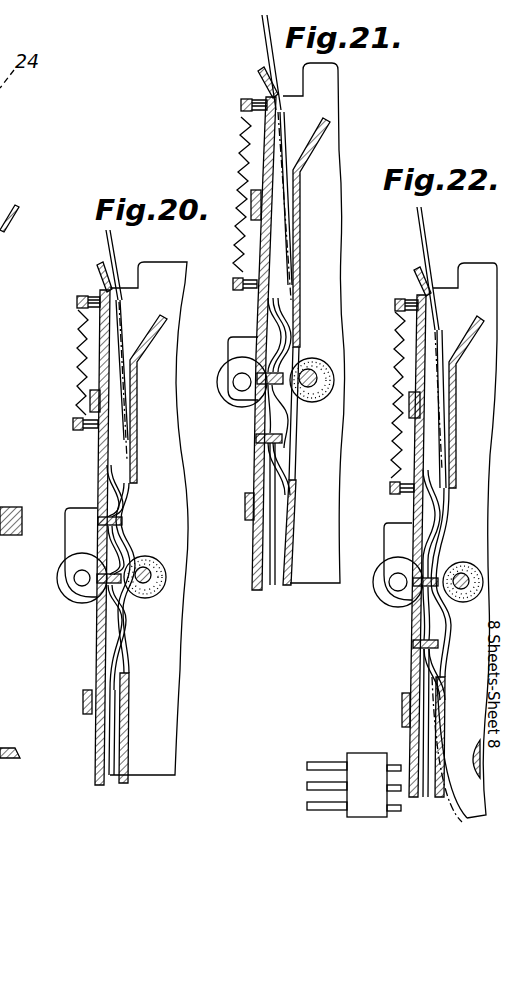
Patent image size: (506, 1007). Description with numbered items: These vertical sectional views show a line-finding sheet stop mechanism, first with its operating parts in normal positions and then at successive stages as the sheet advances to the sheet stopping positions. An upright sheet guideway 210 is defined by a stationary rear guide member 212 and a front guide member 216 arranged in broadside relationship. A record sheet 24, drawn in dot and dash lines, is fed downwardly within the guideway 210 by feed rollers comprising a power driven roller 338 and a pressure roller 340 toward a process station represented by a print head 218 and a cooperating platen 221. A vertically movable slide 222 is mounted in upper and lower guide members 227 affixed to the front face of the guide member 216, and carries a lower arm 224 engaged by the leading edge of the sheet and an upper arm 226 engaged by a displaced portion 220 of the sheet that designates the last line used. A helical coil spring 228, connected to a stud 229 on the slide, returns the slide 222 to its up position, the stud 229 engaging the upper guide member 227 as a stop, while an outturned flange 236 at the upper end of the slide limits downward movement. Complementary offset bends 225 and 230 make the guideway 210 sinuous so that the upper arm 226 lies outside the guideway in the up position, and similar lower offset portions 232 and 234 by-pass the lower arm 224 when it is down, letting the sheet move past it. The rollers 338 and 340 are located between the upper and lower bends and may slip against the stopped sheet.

In FIG. 21, the record sheet 24 is at (266, 38).
In FIG. 20, the record sheet 24 is at (120, 252).
In FIG. 22, the record sheet 24 is at (437, 244).
In FIG. 21, the sheet guideway 210 is at (274, 570).
In FIG. 20, the sheet guideway 210 is at (100, 458).
In FIG. 22, the sheet guideway 210 is at (437, 443).
In FIG. 21, the rear guide member 212 is at (326, 124).
In FIG. 20, the rear guide member 212 is at (152, 399).
In FIG. 22, the rear guide member 212 is at (463, 356).
In FIG. 21, the front guide member 216 is at (279, 95).
In FIG. 20, the front guide member 216 is at (118, 312).
In FIG. 22, the front guide member 216 is at (416, 278).
In FIG. 22, the print head 218 is at (346, 757).
In FIG. 21, the displaced portion 220 is at (297, 262).
In FIG. 20, the displaced portion 220 is at (133, 440).
In FIG. 22, the displaced portion 220 is at (407, 560).
In FIG. 22, the platen 221 is at (432, 748).
In FIG. 21, the slide 222 is at (256, 323).
In FIG. 20, the slide 222 is at (98, 372).
In FIG. 22, the slide 222 is at (408, 513).
In FIG. 21, the lower arm 224 is at (258, 454).
In FIG. 20, the lower arm 224 is at (80, 600).
In FIG. 22, the lower arm 224 is at (425, 650).
In FIG. 21, the offset bend 225 is at (258, 305).
In FIG. 20, the offset bend 225 is at (98, 510).
In FIG. 22, the offset bend 225 is at (413, 512).
In FIG. 21, the upper arm 226 is at (240, 340).
In FIG. 20, the upper arm 226 is at (88, 405).
In FIG. 22, the upper arm 226 is at (398, 561).
In FIG. 21, the guide member 227 is at (257, 218).
In FIG. 20, the guide member 227 is at (90, 398).
In FIG. 22, the guide member 227 is at (409, 408).
In FIG. 21, the helical coil spring 228 is at (241, 125).
In FIG. 20, the helical coil spring 228 is at (78, 345).
In FIG. 22, the helical coil spring 228 is at (398, 318).
In FIG. 21, the stud 229 is at (240, 280).
In FIG. 20, the stud 229 is at (75, 427).
In FIG. 22, the stud 229 is at (402, 488).
In FIG. 21, the offset bend 230 is at (292, 300).
In FIG. 20, the offset bend 230 is at (135, 498).
In FIG. 22, the offset bend 230 is at (460, 495).
In FIG. 21, the lower offset portion 232 is at (290, 500).
In FIG. 20, the lower offset portion 232 is at (97, 645).
In FIG. 22, the lower offset portion 232 is at (422, 660).
In FIG. 21, the lower offset portion 234 is at (298, 448).
In FIG. 20, the lower offset portion 234 is at (128, 655).
In FIG. 22, the lower offset portion 234 is at (450, 632).
In FIG. 21, the outturned flange 236 is at (251, 186).
In FIG. 20, the outturned flange 236 is at (83, 310).
In FIG. 22, the outturned flange 236 is at (408, 392).
In FIG. 21, the power driven roller 338 is at (316, 401).
In FIG. 20, the power driven roller 338 is at (165, 598).
In FIG. 22, the power driven roller 338 is at (474, 620).
In FIG. 21, the pressure roller 340 is at (226, 396).
In FIG. 20, the pressure roller 340 is at (57, 583).
In FIG. 22, the pressure roller 340 is at (398, 582).